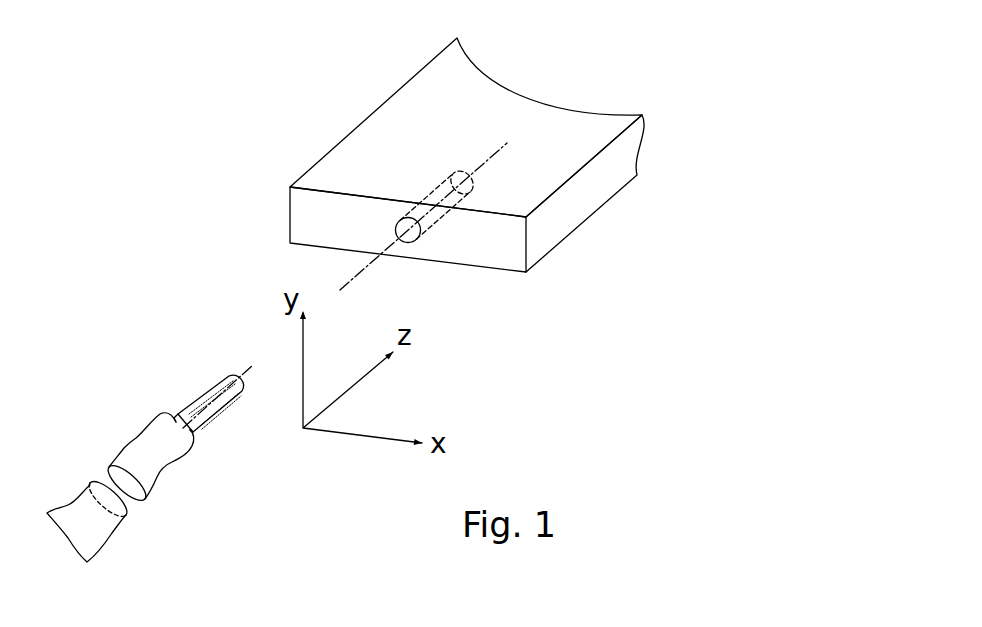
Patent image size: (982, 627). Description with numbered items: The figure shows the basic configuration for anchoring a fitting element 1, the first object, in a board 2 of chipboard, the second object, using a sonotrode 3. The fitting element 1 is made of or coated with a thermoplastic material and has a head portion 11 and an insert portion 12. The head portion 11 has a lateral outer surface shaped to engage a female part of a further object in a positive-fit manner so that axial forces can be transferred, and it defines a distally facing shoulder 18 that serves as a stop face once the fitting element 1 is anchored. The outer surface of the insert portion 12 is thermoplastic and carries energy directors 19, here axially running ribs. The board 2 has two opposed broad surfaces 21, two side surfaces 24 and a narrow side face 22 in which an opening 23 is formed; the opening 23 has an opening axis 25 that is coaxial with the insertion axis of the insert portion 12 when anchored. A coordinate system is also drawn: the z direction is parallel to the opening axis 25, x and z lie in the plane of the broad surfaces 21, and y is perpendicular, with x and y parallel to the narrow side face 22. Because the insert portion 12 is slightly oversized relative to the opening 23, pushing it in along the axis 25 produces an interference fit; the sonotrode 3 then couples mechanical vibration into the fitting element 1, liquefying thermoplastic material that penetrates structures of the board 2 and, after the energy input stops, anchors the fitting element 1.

The fitting element 1 is at (157, 405).
The board 2 is at (302, 121).
The sonotrode 3 is at (90, 533).
The head portion 11 is at (152, 463).
The insert portion 12 is at (187, 410).
The distally facing shoulder 18 is at (200, 430).
The energy directors 19 is at (210, 382).
The broad surfaces 21 is at (443, 93).
The narrow side face 22 is at (500, 238).
The opening 23 is at (421, 233).
The side surfaces 24 is at (587, 192).
The opening axis 25 is at (483, 160).